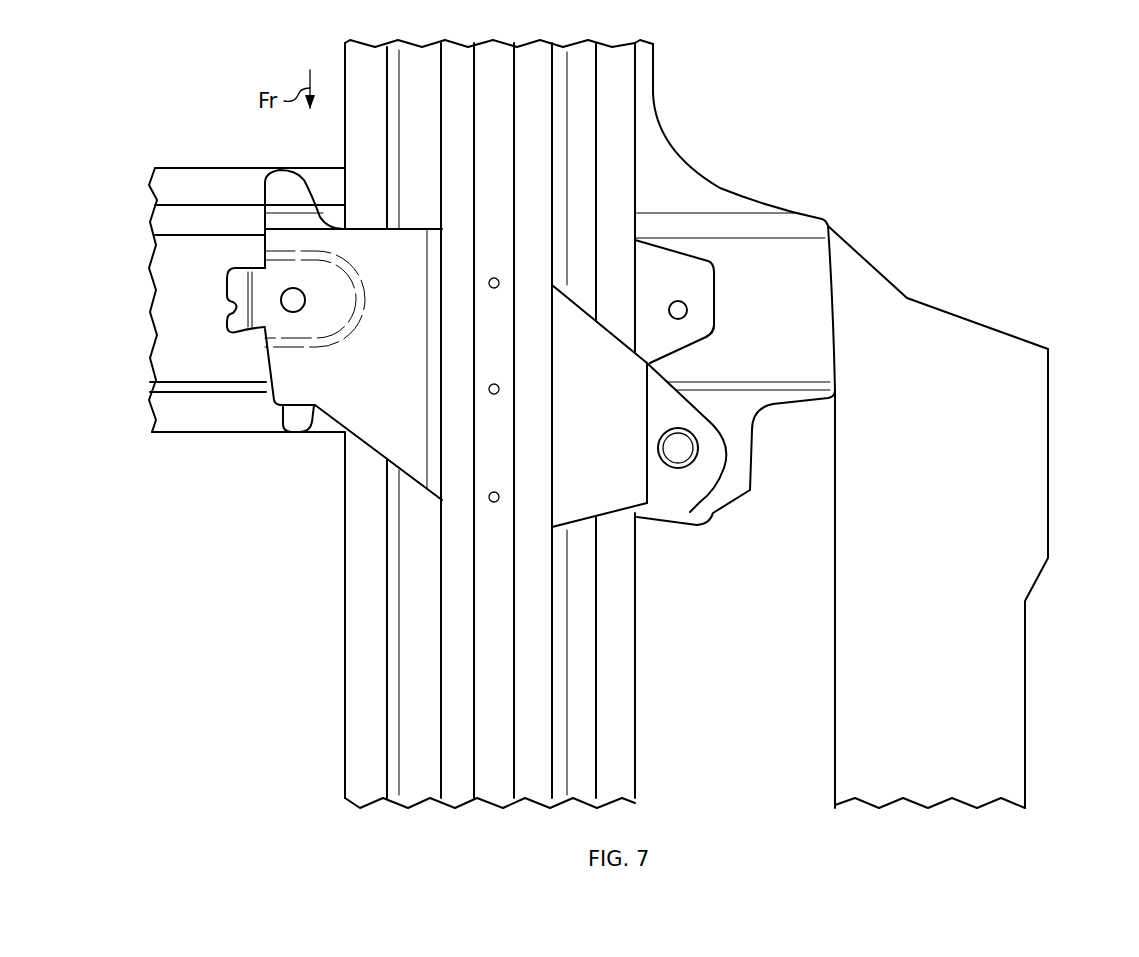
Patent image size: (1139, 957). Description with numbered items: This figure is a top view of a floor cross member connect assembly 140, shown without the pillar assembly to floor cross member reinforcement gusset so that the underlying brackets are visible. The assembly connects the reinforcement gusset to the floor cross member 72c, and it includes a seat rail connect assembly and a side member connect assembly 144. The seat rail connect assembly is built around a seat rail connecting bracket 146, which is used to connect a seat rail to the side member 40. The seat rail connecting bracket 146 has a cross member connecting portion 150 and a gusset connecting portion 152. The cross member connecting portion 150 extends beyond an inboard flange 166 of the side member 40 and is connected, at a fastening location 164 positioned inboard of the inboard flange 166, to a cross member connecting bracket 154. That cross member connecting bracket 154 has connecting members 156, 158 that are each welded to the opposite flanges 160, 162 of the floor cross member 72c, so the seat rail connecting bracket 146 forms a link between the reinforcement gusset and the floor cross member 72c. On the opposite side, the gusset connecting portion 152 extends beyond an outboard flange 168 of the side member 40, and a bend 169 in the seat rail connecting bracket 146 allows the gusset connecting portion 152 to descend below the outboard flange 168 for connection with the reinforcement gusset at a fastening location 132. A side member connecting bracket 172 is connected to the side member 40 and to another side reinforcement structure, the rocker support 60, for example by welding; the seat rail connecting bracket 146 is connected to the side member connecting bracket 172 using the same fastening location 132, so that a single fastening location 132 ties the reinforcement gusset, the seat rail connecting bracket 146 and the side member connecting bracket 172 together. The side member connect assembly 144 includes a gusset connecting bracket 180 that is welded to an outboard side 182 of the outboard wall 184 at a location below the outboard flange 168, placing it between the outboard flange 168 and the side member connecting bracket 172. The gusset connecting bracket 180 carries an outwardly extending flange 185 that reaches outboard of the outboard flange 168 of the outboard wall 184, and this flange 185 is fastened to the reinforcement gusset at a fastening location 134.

The side member 40 is at (407, 757).
The rocker support 60 is at (1052, 450).
The floor cross member 72c is at (150, 307).
The fastening location 132 is at (699, 470).
The fastening location 134 is at (699, 308).
The floor cross member connect assembly 140 is at (829, 426).
The side member connect assembly 144 is at (703, 192).
The seat rail connecting bracket 146 is at (353, 381).
The cross member connecting portion 150 is at (373, 208).
The gusset connecting portion 152 is at (662, 394).
The cross member connecting bracket 154 is at (228, 337).
The connecting member 156 is at (283, 184).
The connecting member 158 is at (293, 422).
The flange 160 is at (217, 309).
The flange 162 is at (178, 432).
The fastening location 164 is at (306, 313).
The inboard flange 166 is at (349, 176).
The outboard flange 168 is at (626, 90).
The bend 169 is at (647, 403).
The side member connecting bracket 172 is at (815, 358).
The gusset connecting bracket 180 is at (716, 289).
The outboard side 182 is at (652, 637).
The outboard wall 184 is at (613, 755).
The outwardly extending flange 185 is at (714, 333).